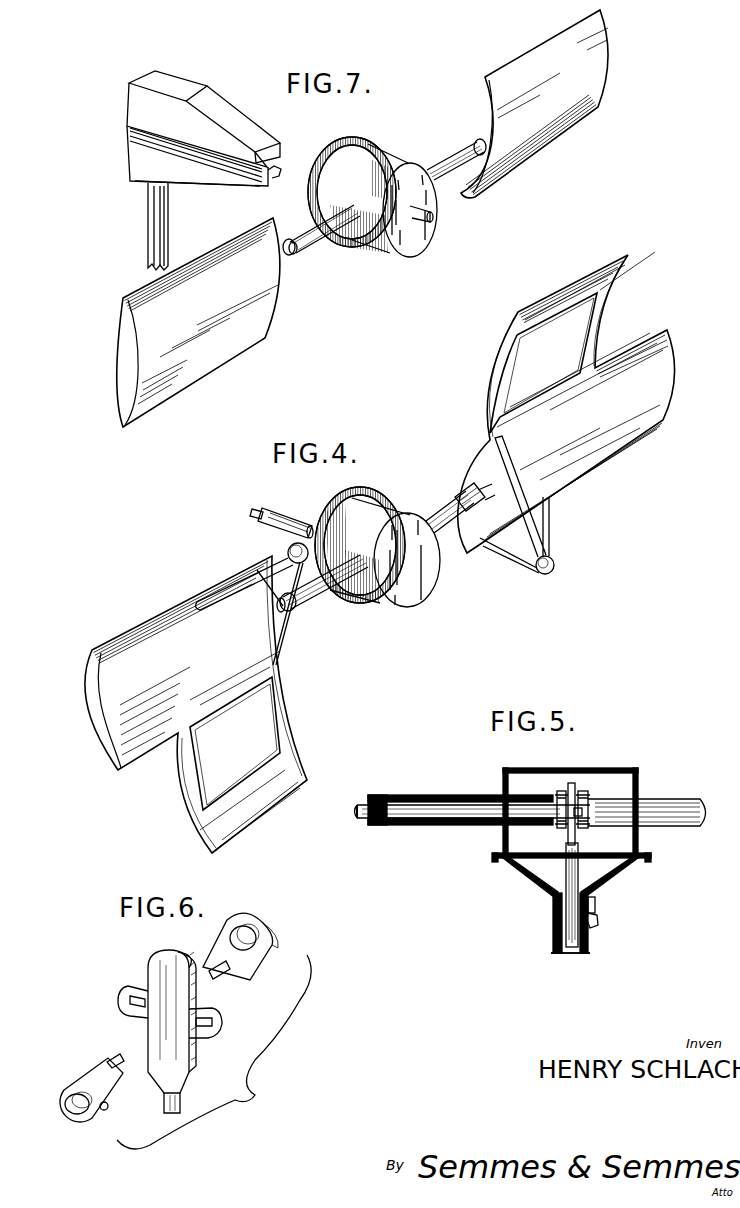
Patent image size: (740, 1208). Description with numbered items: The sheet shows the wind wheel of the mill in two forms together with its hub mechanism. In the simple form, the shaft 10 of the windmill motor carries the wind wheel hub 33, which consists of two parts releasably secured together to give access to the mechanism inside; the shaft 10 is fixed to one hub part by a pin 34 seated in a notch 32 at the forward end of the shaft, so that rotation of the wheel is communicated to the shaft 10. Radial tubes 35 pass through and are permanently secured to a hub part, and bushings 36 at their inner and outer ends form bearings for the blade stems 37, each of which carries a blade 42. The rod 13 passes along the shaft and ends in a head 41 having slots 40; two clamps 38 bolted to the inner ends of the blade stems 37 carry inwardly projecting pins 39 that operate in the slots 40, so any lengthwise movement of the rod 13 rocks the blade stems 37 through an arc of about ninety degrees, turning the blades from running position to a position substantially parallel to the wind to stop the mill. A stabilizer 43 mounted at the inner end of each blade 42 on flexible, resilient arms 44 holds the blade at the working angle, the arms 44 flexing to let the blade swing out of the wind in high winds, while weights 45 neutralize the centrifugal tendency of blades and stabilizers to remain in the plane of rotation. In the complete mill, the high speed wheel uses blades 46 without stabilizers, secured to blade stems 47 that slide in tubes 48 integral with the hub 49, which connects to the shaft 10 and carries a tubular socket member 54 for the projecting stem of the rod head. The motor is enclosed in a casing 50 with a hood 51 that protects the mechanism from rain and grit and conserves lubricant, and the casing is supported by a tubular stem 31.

In FIG. 7, the shaft 10 is at (277, 178).
In FIG. 4, the shaft 10 is at (285, 502).
In FIG. 5, the shaft 10 is at (588, 950).
In FIG. 4, the rod 13 is at (250, 514).
In FIG. 5, the rod 13 is at (566, 898).
In FIG. 6, the rod 13 is at (181, 1099).
In FIG. 7, the tubular stem 31 is at (158, 230).
In FIG. 5, the notch 32 is at (597, 908).
In FIG. 4, the hub 33 is at (320, 520).
In FIG. 5, the hub 33 is at (638, 767).
In FIG. 5, the pin 34 is at (600, 922).
In FIG. 4, the radial tubes 35 is at (430, 510).
In FIG. 5, the radial tubes 35 is at (694, 800).
In FIG. 5, the bushings 36 is at (416, 797).
In FIG. 4, the blade stems 37 is at (466, 488).
In FIG. 5, the blade stems 37 is at (355, 805).
In FIG. 5, the clamps 38 is at (590, 800).
In FIG. 6, the clamps 38 is at (270, 935).
In FIG. 5, the pins 39 is at (586, 820).
In FIG. 6, the pins 39 is at (228, 980).
In FIG. 6, the slots 40 is at (120, 1005).
In FIG. 5, the head 41 is at (572, 783).
In FIG. 6, the head 41 is at (148, 961).
In FIG. 4, the blade 42 is at (152, 612).
In FIG. 4, the stabilizer 43 is at (263, 808).
In FIG. 4, the arms 44 is at (282, 714).
In FIG. 4, the weights 45 is at (288, 552).
In FIG. 7, the blades 46 is at (208, 372).
In FIG. 7, the blade stems 47 is at (290, 270).
In FIG. 7, the tubes 48 is at (322, 256).
In FIG. 7, the hub 49 is at (398, 160).
In FIG. 7, the casing 50 is at (207, 189).
In FIG. 7, the hood 51 is at (135, 99).
In FIG. 7, the tubular socket member 54 is at (435, 220).